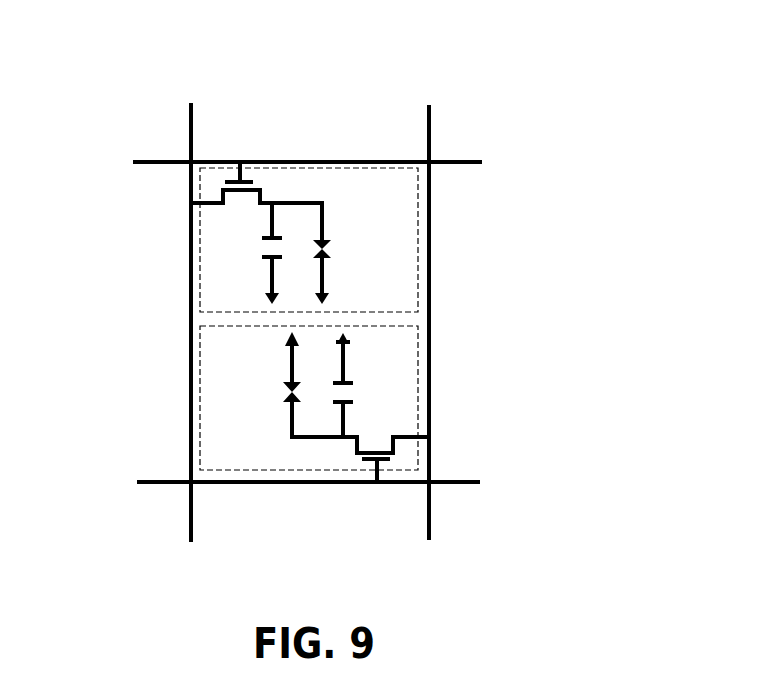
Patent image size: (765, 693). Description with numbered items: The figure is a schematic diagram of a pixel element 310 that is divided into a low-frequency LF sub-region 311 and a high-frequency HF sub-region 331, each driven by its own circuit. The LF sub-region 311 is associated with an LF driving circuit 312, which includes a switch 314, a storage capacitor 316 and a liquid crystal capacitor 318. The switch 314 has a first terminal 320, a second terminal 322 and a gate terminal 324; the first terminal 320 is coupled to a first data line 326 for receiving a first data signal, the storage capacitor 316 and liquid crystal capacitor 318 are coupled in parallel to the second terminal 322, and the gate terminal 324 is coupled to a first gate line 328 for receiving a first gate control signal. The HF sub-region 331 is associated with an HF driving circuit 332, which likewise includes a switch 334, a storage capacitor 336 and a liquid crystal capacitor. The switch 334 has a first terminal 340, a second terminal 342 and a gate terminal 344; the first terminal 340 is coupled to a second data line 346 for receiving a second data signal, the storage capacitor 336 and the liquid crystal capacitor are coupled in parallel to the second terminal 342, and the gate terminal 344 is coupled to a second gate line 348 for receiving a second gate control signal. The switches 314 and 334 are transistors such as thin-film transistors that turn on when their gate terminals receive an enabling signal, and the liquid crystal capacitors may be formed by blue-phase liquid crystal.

The pixel element 310 is at (552, 90).
The LF sub-region 311 is at (309, 240).
The LF driving circuit 312 is at (412, 248).
The switch 314 is at (242, 110).
The storage capacitor 316 is at (228, 243).
The liquid crystal capacitor 318 is at (354, 241).
The first terminal 320 is at (189, 203).
The second terminal 322 is at (262, 203).
The gate terminal 324 is at (240, 160).
The first data line 326 is at (190, 136).
The first gate line 328 is at (155, 165).
The HF sub-region 331 is at (309, 398).
The HF driving circuit 332 is at (207, 380).
The switch 334 is at (384, 512).
The storage capacitor 336 is at (383, 395).
The first terminal 340 is at (430, 437).
The second terminal 342 is at (350, 440).
The gate terminal 344 is at (377, 484).
The second data line 346 is at (430, 135).
The second gate line 348 is at (157, 486).